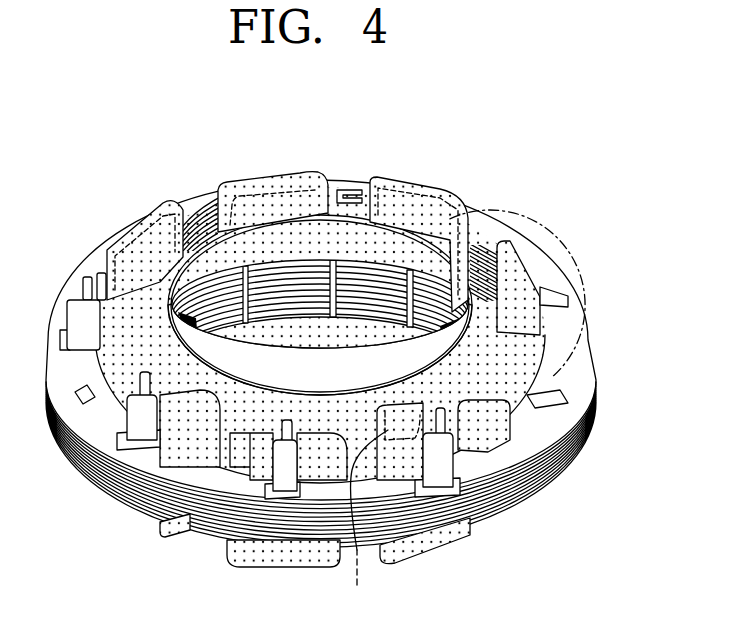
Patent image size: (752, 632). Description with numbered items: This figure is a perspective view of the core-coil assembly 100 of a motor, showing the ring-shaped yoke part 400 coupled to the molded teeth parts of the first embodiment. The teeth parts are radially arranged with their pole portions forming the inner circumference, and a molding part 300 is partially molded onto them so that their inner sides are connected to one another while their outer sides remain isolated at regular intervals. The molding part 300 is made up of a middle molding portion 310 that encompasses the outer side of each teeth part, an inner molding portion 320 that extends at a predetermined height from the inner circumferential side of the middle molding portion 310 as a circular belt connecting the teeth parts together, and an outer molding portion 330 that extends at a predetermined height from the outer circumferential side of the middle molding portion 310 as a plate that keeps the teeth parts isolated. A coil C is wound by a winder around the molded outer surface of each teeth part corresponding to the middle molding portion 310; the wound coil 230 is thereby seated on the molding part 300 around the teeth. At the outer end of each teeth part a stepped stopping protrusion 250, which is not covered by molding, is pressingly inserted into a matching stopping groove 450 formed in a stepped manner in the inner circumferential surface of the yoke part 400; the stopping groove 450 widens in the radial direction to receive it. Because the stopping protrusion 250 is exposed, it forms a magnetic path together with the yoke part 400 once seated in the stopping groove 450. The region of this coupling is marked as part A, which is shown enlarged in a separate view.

The core-coil assembly 100 is at (352, 362).
The coil windings 230 is at (420, 240).
The stopping protrusion 250 is at (570, 400).
The molding part 300 is at (207, 458).
The middle molding portion 310 is at (150, 225).
The inner molding portion 320 is at (182, 260).
The outer molding portion 330 is at (110, 227).
The yoke part 400 is at (90, 440).
The stopping groove 450 is at (572, 448).
The part A is at (553, 229).
The coil C is at (369, 517).